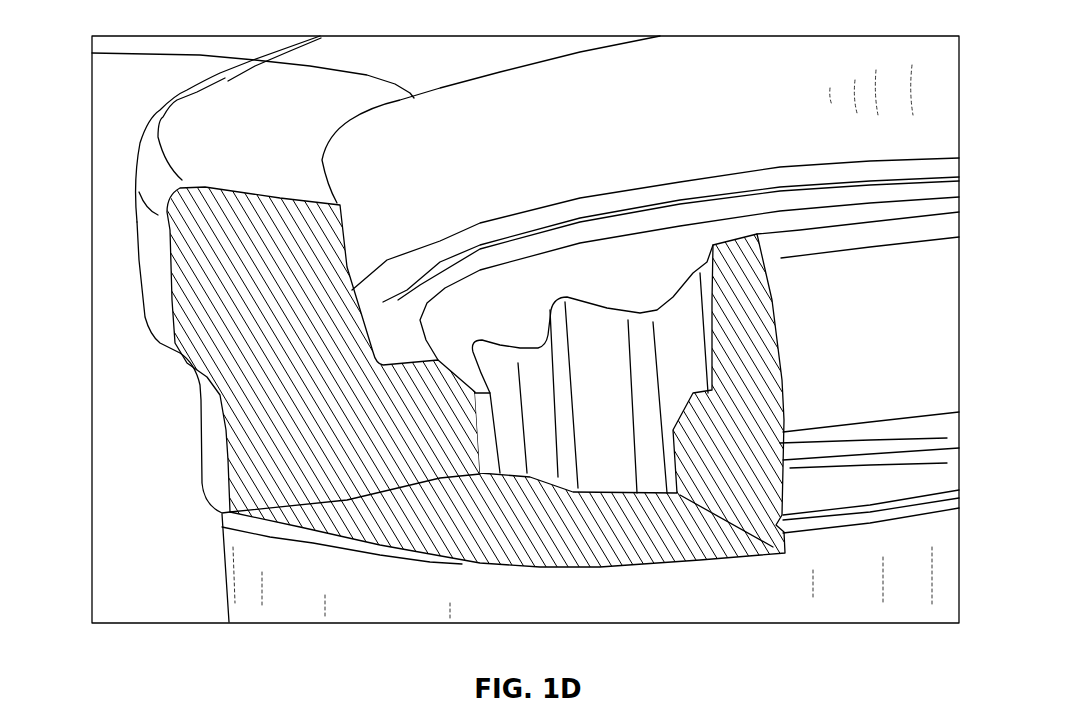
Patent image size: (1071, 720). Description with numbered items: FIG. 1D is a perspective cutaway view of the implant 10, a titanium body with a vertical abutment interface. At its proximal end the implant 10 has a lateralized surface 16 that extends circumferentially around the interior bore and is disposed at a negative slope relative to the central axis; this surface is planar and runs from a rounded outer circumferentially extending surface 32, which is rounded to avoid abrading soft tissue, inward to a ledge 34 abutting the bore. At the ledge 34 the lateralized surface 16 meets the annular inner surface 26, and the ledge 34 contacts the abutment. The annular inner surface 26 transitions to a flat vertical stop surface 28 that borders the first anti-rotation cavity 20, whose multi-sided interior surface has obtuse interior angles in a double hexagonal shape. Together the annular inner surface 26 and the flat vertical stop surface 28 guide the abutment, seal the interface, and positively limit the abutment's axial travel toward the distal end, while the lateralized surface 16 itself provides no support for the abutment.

The implant 10 is at (156, 504).
The lateralized surface 16 is at (230, 138).
The first anti-rotation cavity 20 is at (634, 433).
The annular inner surface 26 is at (348, 271).
The flat vertical stop surface 28 is at (406, 320).
The rounded outer circumferentially extending surface 32 is at (163, 187).
The ledge 34 is at (92, 53).